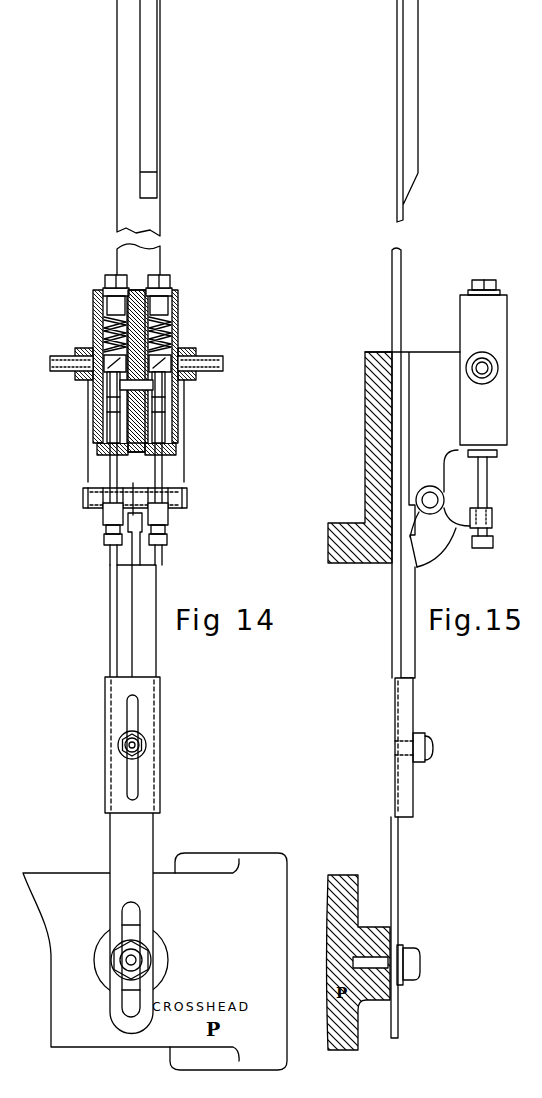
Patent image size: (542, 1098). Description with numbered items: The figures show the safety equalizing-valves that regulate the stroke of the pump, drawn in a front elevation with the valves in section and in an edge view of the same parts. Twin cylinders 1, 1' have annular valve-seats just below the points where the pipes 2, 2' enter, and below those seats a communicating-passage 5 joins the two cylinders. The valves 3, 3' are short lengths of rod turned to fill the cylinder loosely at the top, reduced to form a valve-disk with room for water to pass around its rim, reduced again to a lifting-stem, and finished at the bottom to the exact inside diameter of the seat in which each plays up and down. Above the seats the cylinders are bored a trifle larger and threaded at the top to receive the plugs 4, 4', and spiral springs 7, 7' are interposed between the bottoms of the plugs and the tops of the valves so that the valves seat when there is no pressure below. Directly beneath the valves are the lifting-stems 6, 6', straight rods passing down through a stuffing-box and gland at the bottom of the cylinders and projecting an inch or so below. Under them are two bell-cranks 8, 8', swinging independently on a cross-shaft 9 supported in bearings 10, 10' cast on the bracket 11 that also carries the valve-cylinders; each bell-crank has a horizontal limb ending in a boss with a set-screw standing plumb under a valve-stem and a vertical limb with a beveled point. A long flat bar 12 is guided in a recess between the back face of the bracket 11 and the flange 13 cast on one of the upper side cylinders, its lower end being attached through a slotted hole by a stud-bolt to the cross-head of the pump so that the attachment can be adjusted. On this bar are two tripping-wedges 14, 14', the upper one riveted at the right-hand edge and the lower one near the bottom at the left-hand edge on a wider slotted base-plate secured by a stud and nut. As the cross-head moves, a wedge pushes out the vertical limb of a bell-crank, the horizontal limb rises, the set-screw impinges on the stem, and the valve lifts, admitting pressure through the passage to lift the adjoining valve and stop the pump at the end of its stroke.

In FIG. 14, the tripping-wedge 14 is at (154, 137).
In FIG. 15, the tripping-wedge 14 is at (423, 111).
In FIG. 14, the tripping-wedge 14' is at (133, 689).
In FIG. 15, the tripping-wedge 14' is at (421, 692).
In FIG. 14, the long flat bar 12 is at (131, 923).
In FIG. 15, the long flat bar 12 is at (407, 927).
In FIG. 14, the communicating-passage 5 is at (136, 386).
In FIG. 14, the twin cylinder 1 is at (172, 358).
In FIG. 14, the twin cylinder 1' is at (102, 357).
In FIG. 15, the twin cylinder 1' is at (483, 362).
In FIG. 14, the spiral spring 7 is at (172, 301).
In FIG. 14, the spiral spring 7' is at (102, 301).
In FIG. 14, the plug 4 is at (167, 282).
In FIG. 14, the plug 4' is at (107, 281).
In FIG. 14, the valve 3 is at (194, 355).
In FIG. 14, the valve 3' is at (77, 357).
In FIG. 14, the pipe 2 is at (205, 363).
In FIG. 14, the pipe 2' is at (61, 363).
In FIG. 15, the pipe 2' is at (494, 368).
In FIG. 14, the lifting-stem 6 is at (176, 474).
In FIG. 14, the lifting-stem 6' is at (94, 474).
In FIG. 14, the cross-shaft 9 is at (188, 500).
In FIG. 15, the cross-shaft 9 is at (434, 498).
In FIG. 14, the bearing 10 is at (180, 491).
In FIG. 15, the bearing 10 is at (430, 491).
In FIG. 14, the bearing 10' is at (92, 492).
In FIG. 14, the bell-crank 8 is at (167, 534).
In FIG. 14, the bell-crank 8' is at (103, 534).
In FIG. 15, the bell-crank 8' is at (434, 539).
In FIG. 15, the flange 13 is at (360, 457).
In FIG. 15, the bracket 11 is at (412, 459).